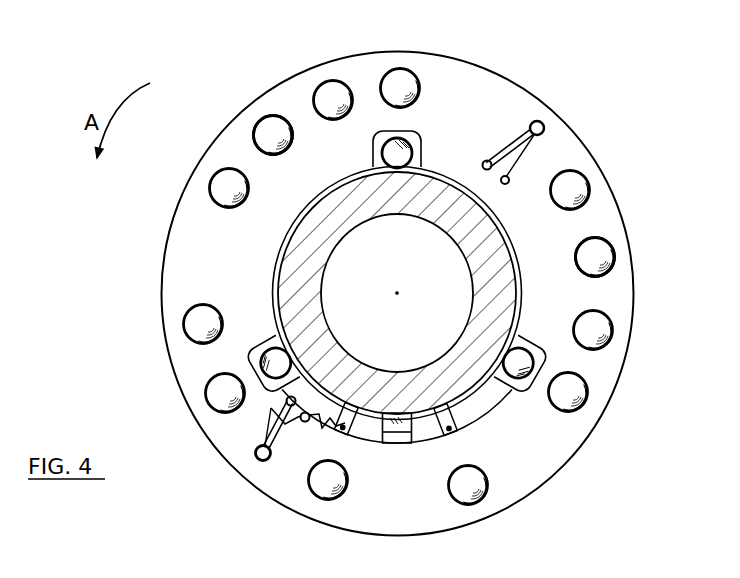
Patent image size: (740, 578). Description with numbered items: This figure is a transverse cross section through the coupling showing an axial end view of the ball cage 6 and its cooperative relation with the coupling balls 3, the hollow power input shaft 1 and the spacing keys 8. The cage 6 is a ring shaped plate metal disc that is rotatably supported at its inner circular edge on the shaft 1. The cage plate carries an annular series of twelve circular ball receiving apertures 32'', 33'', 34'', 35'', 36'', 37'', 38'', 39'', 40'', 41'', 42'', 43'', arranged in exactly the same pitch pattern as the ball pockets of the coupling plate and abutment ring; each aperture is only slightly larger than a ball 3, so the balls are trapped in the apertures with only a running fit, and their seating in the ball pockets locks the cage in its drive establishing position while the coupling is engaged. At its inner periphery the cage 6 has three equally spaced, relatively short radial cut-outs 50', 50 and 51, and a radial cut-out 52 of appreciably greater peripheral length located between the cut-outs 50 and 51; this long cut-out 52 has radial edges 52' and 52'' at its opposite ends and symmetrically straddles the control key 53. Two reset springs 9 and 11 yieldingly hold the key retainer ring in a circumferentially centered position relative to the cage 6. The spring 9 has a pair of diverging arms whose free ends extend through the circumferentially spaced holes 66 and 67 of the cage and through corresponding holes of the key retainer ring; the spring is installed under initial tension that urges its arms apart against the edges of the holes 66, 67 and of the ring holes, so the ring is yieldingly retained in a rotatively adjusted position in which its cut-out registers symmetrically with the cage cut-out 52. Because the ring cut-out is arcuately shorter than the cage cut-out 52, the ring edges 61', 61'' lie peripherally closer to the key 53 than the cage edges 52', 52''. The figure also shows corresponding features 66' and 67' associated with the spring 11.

The hollow power input shaft 1 is at (323, 273).
The coupling balls 3 is at (240, 193).
The ball cage 6 is at (548, 118).
The spacing keys 8 is at (383, 147).
The reset spring 9 is at (262, 462).
The reset spring 11 is at (527, 129).
The ball receiving aperture 32'' is at (416, 65).
The ball receiving aperture 33'' is at (334, 71).
The ball receiving aperture 34'' is at (247, 119).
The ball receiving aperture 35'' is at (203, 176).
The ball receiving aperture 36'' is at (170, 322).
The ball receiving aperture 37'' is at (195, 407).
The ball receiving aperture 38'' is at (322, 516).
The ball receiving aperture 39'' is at (494, 504).
The ball receiving aperture 40'' is at (606, 392).
The ball receiving aperture 41'' is at (631, 321).
The ball receiving aperture 42'' is at (630, 248).
The ball receiving aperture 43'' is at (607, 181).
The radial cut-out 50 is at (272, 353).
The radial cut-out 50' is at (421, 146).
The radial cut-out 51 is at (527, 343).
The radial cut-out 52 is at (397, 455).
The radial edge 52' is at (321, 440).
The radial edge 52'' is at (473, 432).
The control key 53 is at (396, 445).
The ring edge 61' is at (366, 459).
The ring edge 61'' is at (431, 454).
The hole 66 is at (328, 361).
The pin head 66' is at (466, 160).
The hole 67 is at (334, 378).
The spring wire end 67' is at (512, 198).